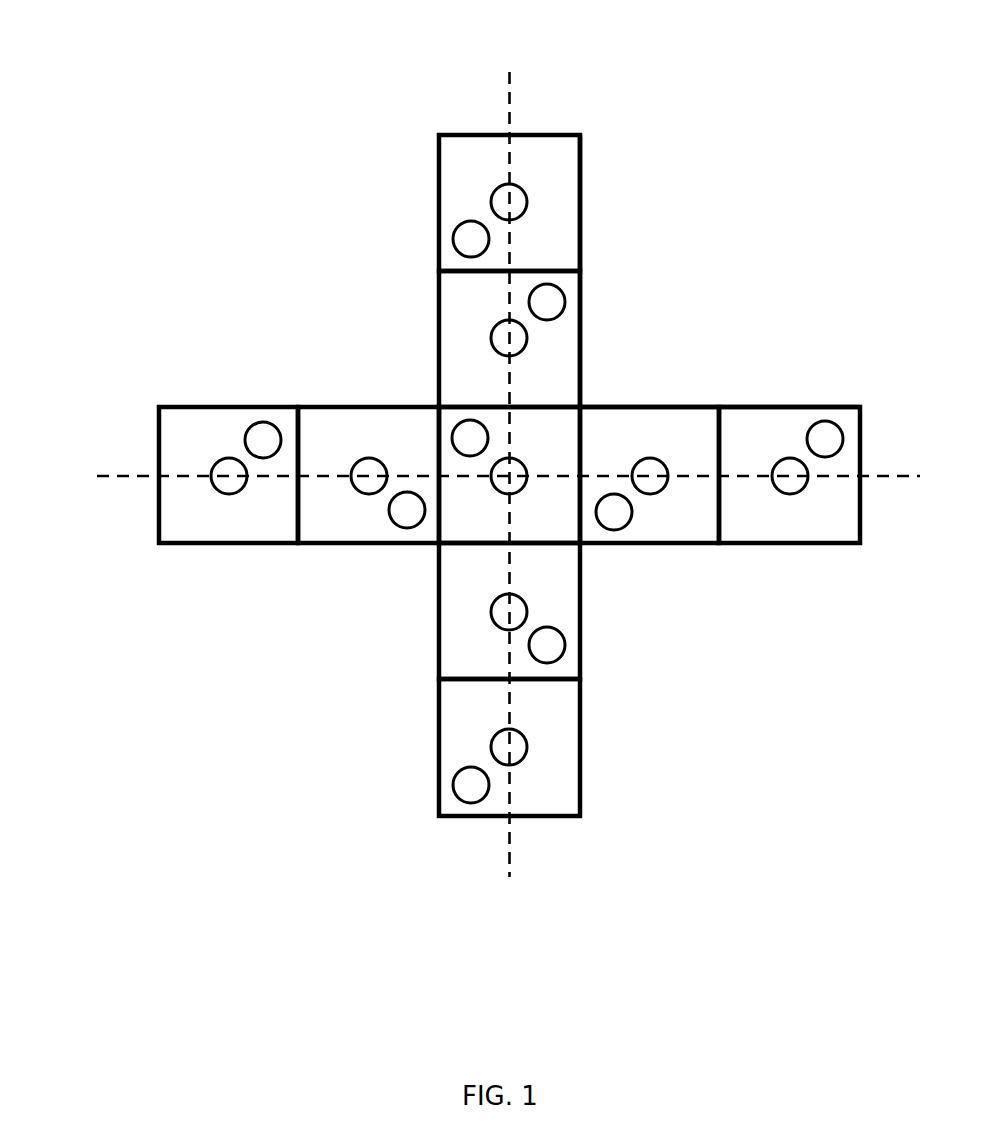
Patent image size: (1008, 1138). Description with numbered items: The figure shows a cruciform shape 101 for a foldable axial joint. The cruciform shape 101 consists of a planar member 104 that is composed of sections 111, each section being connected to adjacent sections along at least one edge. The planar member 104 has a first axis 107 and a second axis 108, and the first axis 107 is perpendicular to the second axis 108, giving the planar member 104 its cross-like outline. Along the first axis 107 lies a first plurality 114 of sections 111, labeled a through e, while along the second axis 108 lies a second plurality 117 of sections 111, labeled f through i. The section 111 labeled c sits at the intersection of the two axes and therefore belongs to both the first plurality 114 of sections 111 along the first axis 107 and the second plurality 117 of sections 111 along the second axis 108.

The cruciform shape 101 is at (192, 713).
The planar member 104 is at (580, 747).
The first axis 107 is at (510, 116).
The second axis 108 is at (120, 474).
The sections 111 is at (580, 338).
The first plurality of sections 114 is at (462, 111).
The second plurality of sections 117 is at (125, 516).